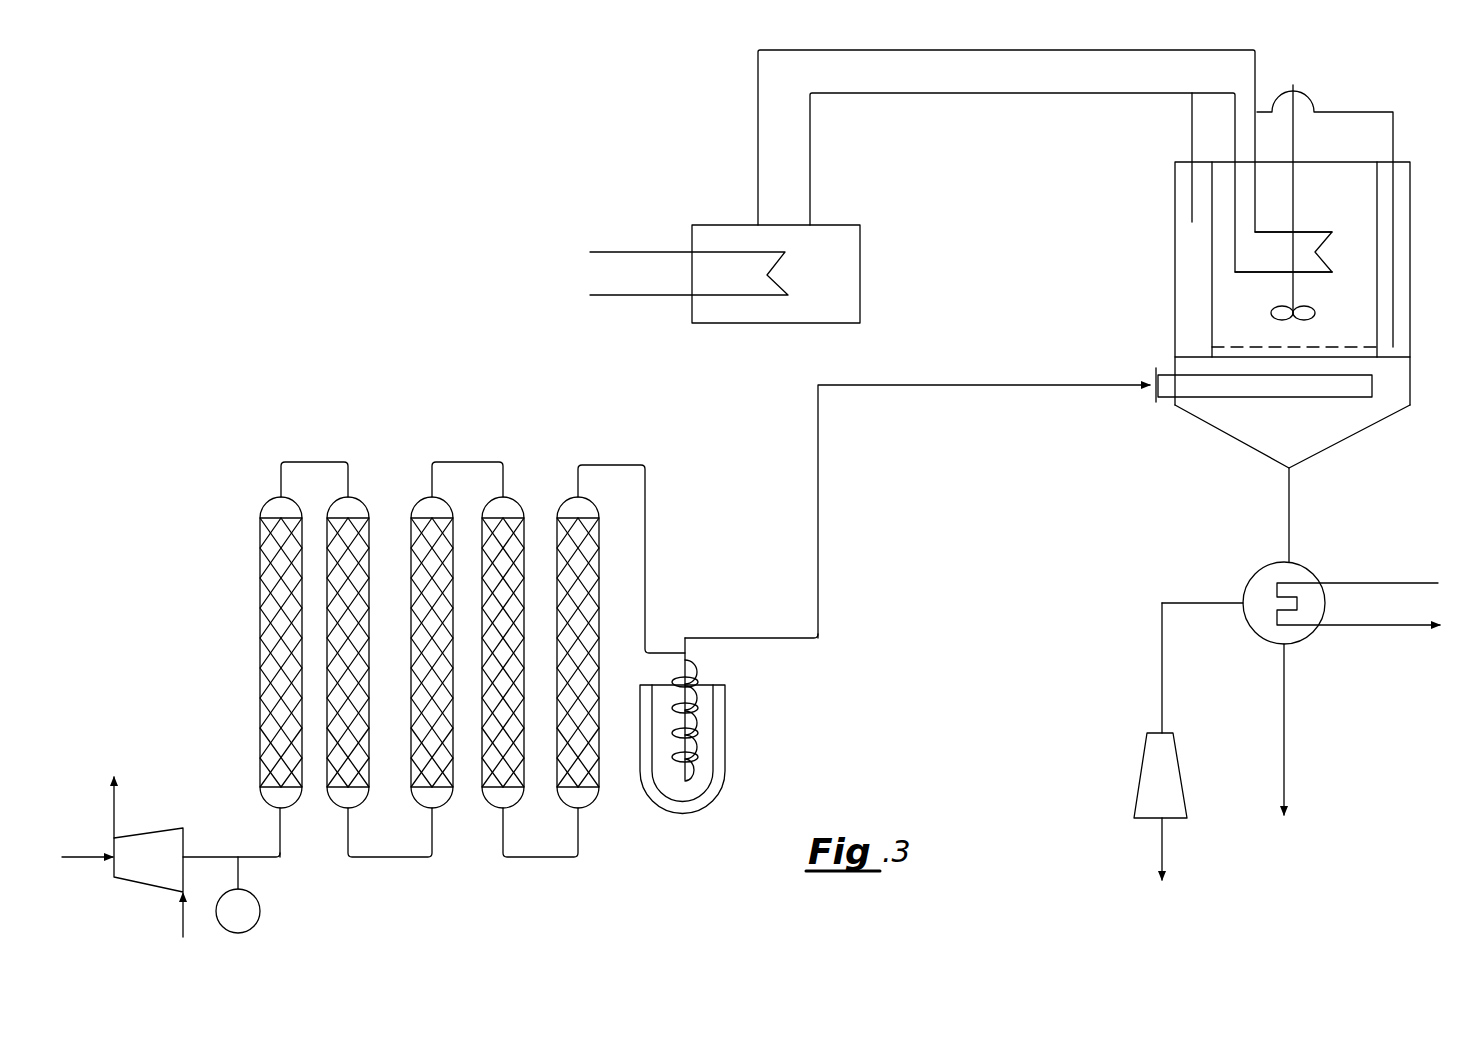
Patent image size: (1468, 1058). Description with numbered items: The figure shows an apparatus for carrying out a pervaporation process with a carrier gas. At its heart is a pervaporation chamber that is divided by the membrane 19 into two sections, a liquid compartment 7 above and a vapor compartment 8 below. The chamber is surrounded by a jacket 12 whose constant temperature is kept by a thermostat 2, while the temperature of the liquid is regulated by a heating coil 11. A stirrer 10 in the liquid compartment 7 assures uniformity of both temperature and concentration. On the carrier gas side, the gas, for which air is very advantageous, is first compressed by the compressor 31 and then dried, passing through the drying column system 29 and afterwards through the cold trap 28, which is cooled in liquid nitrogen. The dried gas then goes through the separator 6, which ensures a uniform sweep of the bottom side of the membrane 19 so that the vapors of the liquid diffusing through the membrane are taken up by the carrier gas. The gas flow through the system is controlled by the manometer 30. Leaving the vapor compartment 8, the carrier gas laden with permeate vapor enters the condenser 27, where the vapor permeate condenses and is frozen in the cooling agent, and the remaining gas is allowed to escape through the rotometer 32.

The thermostat 2 is at (828, 225).
The separator 6 is at (1375, 385).
The liquid compartment 7 is at (1352, 235).
The vapor compartment 8 is at (1320, 422).
The stirrer 10 is at (1296, 138).
The heating coil 11 is at (1328, 260).
The jacket 12 is at (1190, 240).
The membrane 19 is at (1343, 347).
The condenser 27 is at (1305, 570).
The cold trap 28 is at (727, 715).
The drying column system 29 is at (614, 462).
The manometer 30 is at (258, 903).
The compressor 31 is at (138, 833).
The rotometer 32 is at (1140, 760).